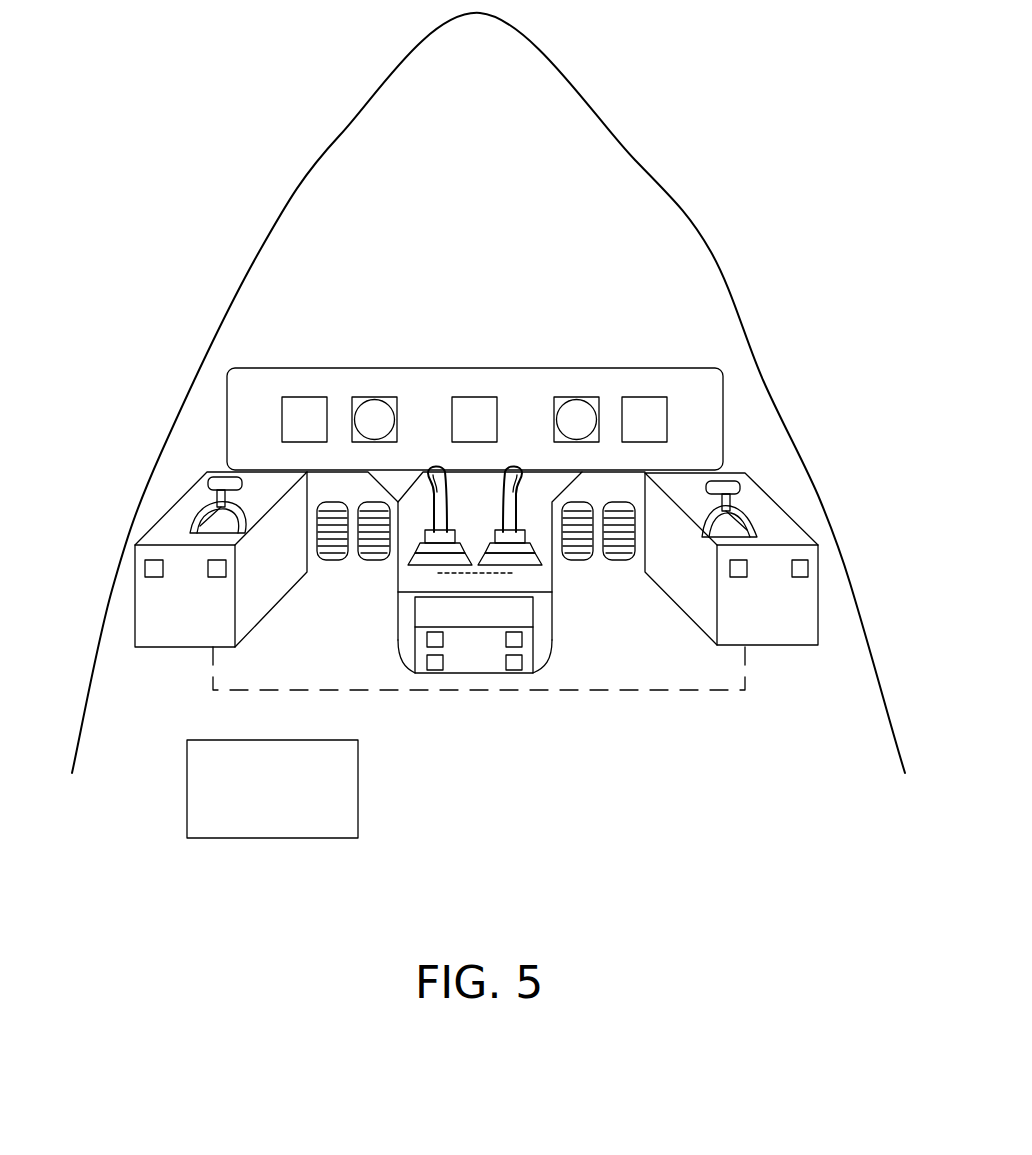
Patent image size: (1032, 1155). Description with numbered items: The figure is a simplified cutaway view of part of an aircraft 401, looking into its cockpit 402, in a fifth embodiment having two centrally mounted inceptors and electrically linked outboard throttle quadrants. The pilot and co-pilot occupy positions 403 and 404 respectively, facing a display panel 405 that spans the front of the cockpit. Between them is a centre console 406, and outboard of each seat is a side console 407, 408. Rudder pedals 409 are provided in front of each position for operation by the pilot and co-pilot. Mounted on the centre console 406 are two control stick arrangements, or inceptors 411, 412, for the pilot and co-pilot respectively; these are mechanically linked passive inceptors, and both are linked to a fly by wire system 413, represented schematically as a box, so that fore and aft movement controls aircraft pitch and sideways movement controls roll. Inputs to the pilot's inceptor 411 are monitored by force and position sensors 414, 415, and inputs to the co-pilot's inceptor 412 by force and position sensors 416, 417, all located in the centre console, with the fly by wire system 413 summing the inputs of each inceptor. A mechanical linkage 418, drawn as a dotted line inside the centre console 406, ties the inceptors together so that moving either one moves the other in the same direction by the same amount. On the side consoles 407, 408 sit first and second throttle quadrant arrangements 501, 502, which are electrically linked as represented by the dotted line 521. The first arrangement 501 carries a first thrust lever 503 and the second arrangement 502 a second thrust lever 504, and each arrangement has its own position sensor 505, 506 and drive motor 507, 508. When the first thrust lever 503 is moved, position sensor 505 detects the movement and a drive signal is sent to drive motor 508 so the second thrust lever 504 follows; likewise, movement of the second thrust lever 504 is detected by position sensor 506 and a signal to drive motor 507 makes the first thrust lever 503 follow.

The aircraft 401 is at (592, 100).
The cockpit 402 is at (620, 824).
The pilot position 403 is at (307, 677).
The co-pilot position 404 is at (693, 677).
The display panel 405 is at (430, 380).
The centre console 406 is at (425, 595).
The side console 407 is at (193, 624).
The side console 408 is at (800, 624).
The rudder pedals 409 is at (333, 560).
The inceptor 411 is at (431, 484).
The inceptor 412 is at (544, 472).
The fly by wire system 413 is at (358, 791).
The force sensor 414 is at (435, 640).
The position sensor 415 is at (435, 661).
The force sensor 416 is at (514, 661).
The position sensor 417 is at (513, 641).
The mechanical linkage 418 is at (537, 594).
The first throttle quadrant arrangement 501 is at (200, 515).
The second throttle quadrant arrangement 502 is at (752, 514).
The first thrust lever 503 is at (213, 478).
The second thrust lever 504 is at (735, 481).
The position sensor 505 is at (155, 570).
The position sensor 506 is at (738, 572).
The drive motor 507 is at (218, 572).
The drive motor 508 is at (800, 572).
The electrical link 521 is at (665, 692).